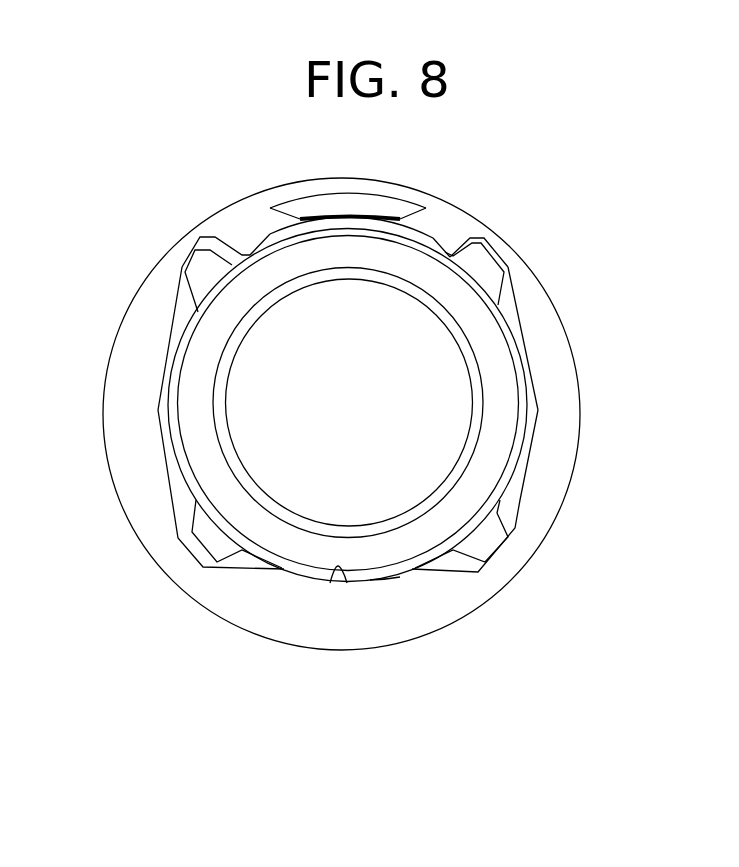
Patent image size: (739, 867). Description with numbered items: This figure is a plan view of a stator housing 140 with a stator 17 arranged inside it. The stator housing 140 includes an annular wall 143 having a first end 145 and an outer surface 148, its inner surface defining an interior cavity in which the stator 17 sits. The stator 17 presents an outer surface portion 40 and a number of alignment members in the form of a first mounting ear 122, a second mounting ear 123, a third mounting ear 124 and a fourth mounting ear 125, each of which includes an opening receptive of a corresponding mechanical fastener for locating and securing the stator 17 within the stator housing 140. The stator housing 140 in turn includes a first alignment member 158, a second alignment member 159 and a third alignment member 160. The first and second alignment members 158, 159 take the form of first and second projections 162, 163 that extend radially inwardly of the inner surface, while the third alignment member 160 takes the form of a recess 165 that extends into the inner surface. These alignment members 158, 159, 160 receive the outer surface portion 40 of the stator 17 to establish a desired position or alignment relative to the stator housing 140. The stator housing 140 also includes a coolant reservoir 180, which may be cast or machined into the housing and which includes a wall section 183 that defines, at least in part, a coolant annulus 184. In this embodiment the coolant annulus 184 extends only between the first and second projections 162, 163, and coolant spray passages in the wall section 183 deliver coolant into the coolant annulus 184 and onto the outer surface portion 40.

The stator 17 is at (425, 465).
The outer surface portion 40 is at (528, 510).
The first mounting ear 122 is at (203, 273).
The second mounting ear 123 is at (494, 278).
The third mounting ear 124 is at (492, 538).
The fourth mounting ear 125 is at (206, 533).
The stator housing 140 is at (540, 619).
The annular wall 143 is at (397, 664).
The first end 145 is at (120, 383).
The outer surface 148 is at (207, 622).
The first alignment member 158 is at (233, 210).
The second alignment member 159 is at (450, 234).
The third alignment member 160 is at (395, 591).
The first projection 162 is at (255, 237).
The second projection 163 is at (452, 246).
The recess 165 is at (333, 582).
The coolant reservoir 180 is at (334, 206).
The wall section 183 is at (329, 221).
The coolant annulus 184 is at (403, 225).